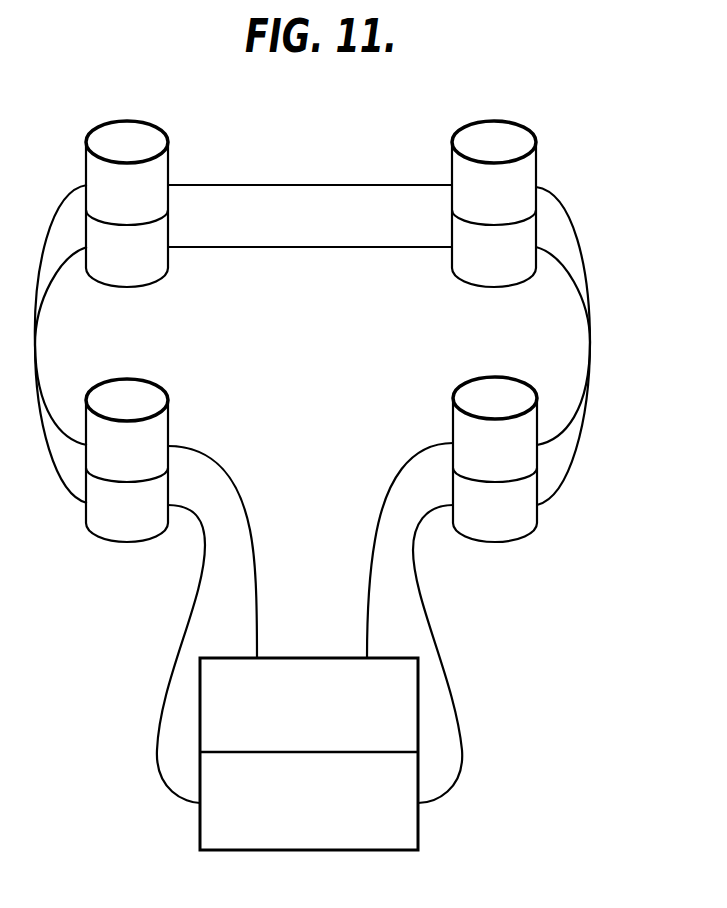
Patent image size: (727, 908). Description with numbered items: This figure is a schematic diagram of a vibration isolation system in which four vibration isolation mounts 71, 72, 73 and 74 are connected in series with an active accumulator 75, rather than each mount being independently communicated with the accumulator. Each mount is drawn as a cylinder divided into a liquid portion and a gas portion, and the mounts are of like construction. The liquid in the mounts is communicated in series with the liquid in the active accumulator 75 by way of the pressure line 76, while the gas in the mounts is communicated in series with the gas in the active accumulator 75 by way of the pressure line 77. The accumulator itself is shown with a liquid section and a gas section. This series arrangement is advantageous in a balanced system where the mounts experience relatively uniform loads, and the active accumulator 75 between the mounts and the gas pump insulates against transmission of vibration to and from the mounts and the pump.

The vibration isolation mount 71 is at (456, 394).
The vibration isolation mount 72 is at (532, 133).
The vibration isolation mount 73 is at (166, 136).
The vibration isolation mount 74 is at (166, 395).
The active accumulator 75 is at (425, 823).
The pressure line 76 is at (366, 593).
The pressure line 77 is at (444, 666).